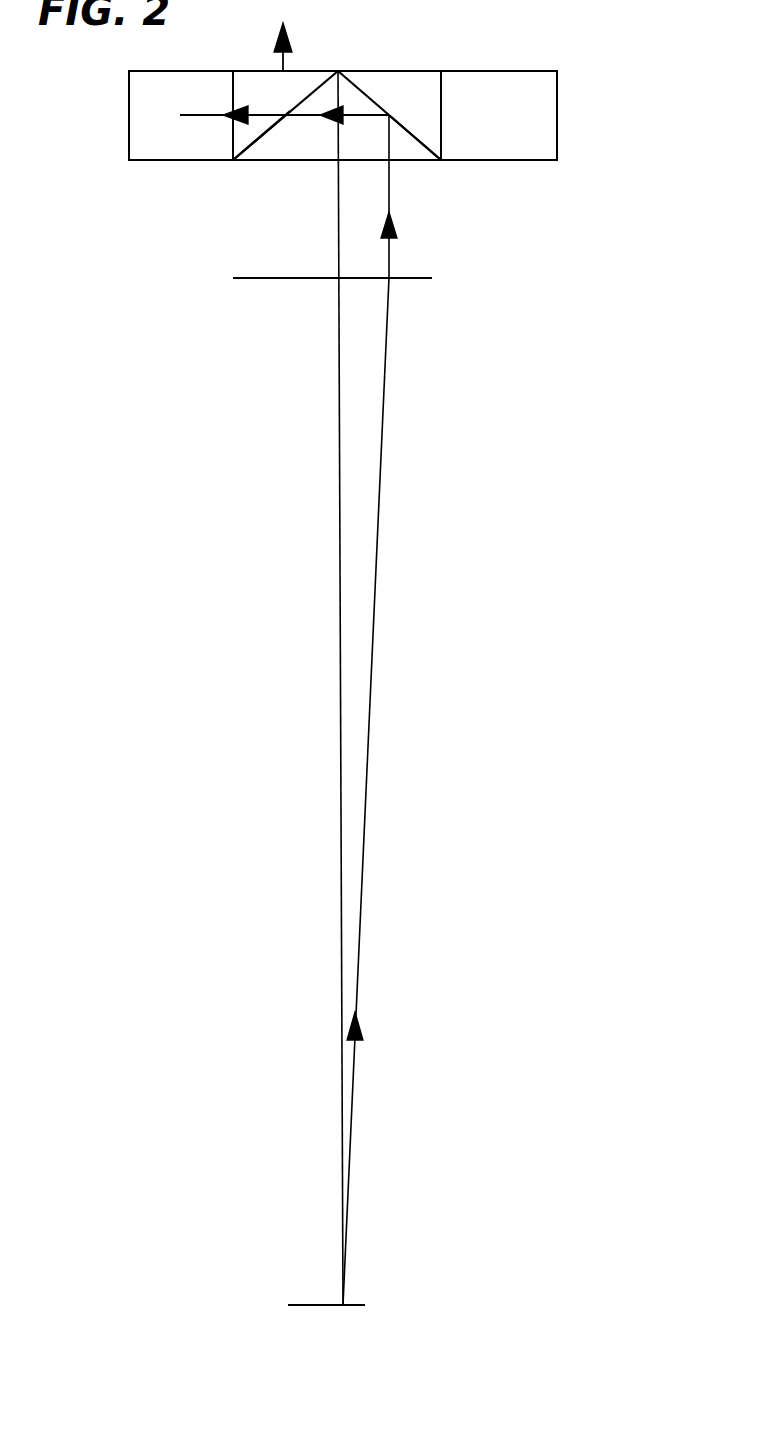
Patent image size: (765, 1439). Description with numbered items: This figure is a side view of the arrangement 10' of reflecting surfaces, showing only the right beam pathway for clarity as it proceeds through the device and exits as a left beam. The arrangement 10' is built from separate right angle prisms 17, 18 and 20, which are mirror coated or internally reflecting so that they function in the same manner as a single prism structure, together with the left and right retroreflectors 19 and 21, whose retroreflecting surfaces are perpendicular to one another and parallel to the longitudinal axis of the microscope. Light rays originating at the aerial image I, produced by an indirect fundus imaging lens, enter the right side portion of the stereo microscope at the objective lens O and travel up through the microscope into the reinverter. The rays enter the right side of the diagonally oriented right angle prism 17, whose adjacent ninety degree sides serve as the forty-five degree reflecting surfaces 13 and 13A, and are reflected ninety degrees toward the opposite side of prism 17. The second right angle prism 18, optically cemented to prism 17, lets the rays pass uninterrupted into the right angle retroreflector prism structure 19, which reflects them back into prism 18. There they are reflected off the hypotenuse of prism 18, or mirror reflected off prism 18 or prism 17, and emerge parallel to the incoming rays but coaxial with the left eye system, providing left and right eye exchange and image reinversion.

The arrangement of reflecting surfaces 10' is at (417, 117).
The reflecting surface 13 is at (258, 140).
The reflecting surface 13A is at (410, 135).
The right angle prism 17 is at (330, 158).
The second right angle prism 18 is at (268, 107).
The right angle retroreflector prism structure 19 is at (204, 107).
The right angle prism 20 is at (420, 107).
The right retroreflector 21 is at (520, 135).
The objective lens O is at (420, 278).
The aerial image I is at (297, 1305).